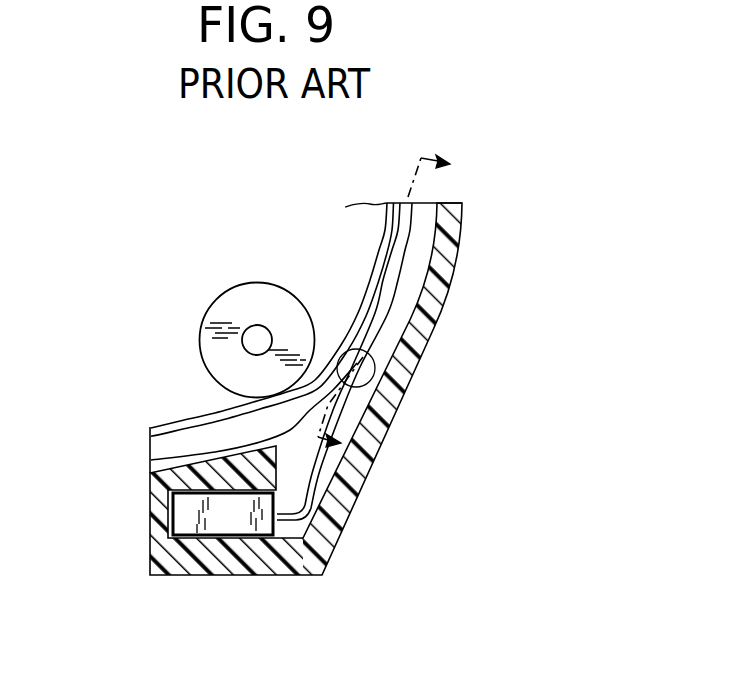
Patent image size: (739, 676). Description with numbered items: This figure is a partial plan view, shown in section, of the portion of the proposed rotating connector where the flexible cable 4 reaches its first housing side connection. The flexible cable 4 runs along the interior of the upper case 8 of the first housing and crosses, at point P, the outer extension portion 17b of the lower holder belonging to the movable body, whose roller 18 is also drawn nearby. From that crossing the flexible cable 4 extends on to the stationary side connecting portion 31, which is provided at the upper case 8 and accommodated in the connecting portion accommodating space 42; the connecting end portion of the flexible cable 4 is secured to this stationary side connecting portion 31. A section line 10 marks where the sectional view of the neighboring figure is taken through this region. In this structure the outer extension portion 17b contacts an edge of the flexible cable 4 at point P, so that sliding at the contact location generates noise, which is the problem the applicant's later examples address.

The flexible cable 4 is at (151, 428).
The upper case 8 is at (452, 292).
The section line 10— 10 is at (371, 294).
The outer extension portion 17b is at (183, 460).
The roller 18 is at (259, 299).
The stationary side connecting portion 31 is at (240, 523).
The connecting portion accommodating space 42 is at (188, 537).
The point P is at (376, 360).